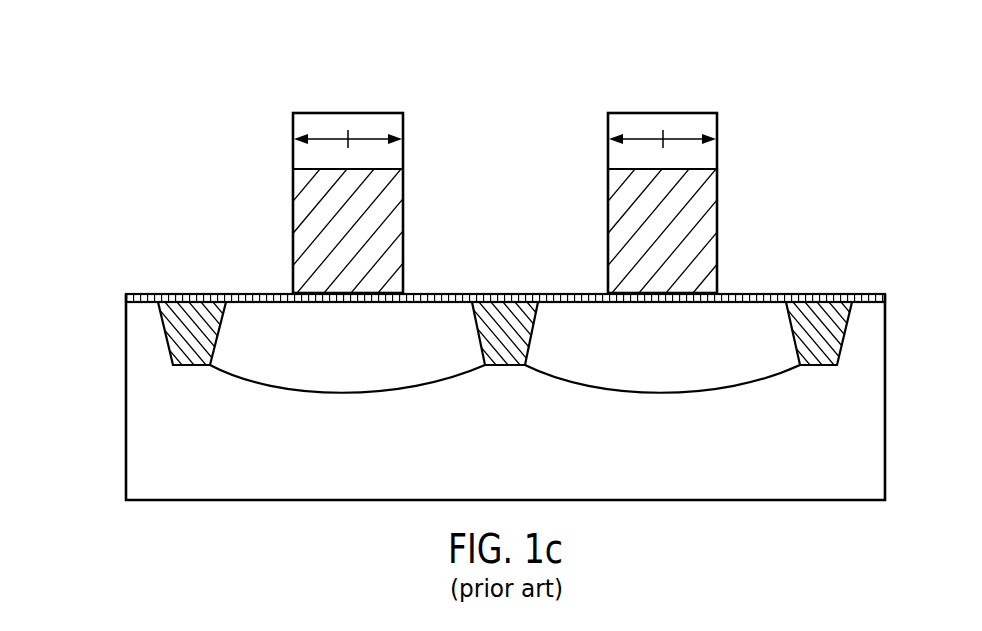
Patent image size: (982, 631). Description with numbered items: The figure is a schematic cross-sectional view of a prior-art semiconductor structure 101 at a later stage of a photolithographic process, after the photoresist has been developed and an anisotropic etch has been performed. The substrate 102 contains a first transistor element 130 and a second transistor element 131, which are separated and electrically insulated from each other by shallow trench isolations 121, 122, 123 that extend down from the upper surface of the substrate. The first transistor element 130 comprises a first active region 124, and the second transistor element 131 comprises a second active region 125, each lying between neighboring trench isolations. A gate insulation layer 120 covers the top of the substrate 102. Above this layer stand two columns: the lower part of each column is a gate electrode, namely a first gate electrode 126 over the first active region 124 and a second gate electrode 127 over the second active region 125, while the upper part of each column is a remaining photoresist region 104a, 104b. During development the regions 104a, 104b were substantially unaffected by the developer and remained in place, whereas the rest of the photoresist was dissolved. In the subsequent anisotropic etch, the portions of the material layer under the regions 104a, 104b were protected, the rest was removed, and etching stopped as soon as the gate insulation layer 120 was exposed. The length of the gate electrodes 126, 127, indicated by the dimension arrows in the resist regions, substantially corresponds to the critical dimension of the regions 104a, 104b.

The semiconductor structure 101 is at (108, 81).
The substrate 102 is at (128, 478).
The region of the photoresist layer 104a is at (349, 172).
The region of the photoresist layer 104b is at (664, 172).
The gate insulation layer 120 is at (126, 294).
The shallow trench isolation 121 is at (183, 367).
The shallow trench isolation 122 is at (493, 367).
The shallow trench isolation 123 is at (808, 367).
The first active region 124 is at (325, 395).
The second active region 125 is at (638, 395).
The first gate electrode 126 is at (293, 218).
The second gate electrode 127 is at (608, 218).
The first transistor element 130 is at (246, 402).
The second transistor element 131 is at (559, 402).